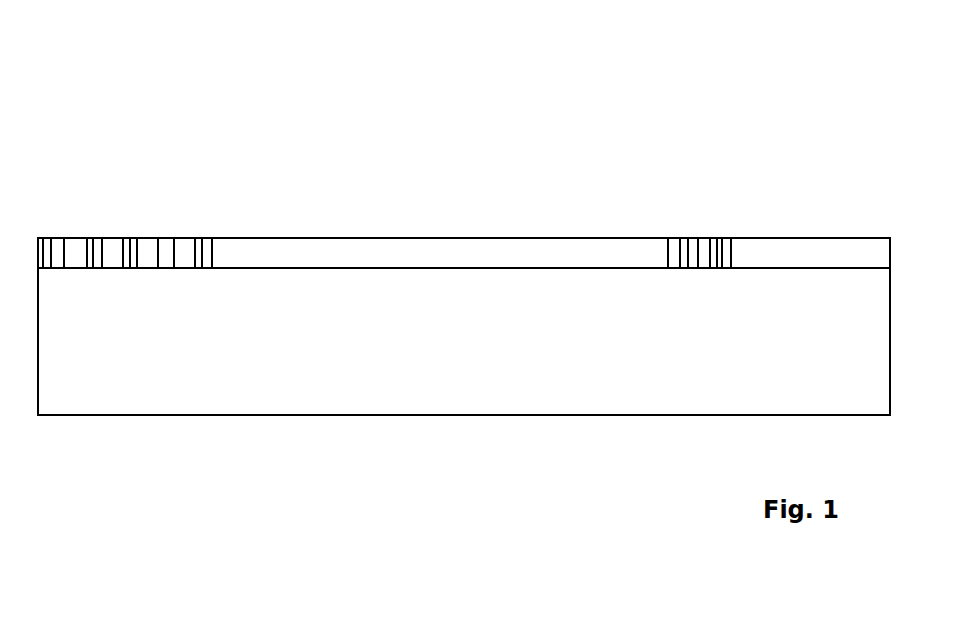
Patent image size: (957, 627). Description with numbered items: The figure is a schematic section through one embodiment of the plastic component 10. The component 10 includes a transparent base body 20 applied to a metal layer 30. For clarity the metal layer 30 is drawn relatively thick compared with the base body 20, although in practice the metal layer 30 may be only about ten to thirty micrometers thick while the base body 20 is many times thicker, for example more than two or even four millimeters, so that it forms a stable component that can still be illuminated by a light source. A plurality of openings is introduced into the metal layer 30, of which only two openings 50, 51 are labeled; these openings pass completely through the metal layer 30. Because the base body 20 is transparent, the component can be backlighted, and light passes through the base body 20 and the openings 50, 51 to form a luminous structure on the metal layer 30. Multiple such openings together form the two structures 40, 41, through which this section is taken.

The plastic component 10 is at (464, 261).
The transparent base body 20 is at (232, 398).
The metal layer 30 is at (372, 253).
The structure 40 is at (127, 222).
The structure 41 is at (698, 231).
The opening 50 is at (207, 238).
The opening 51 is at (725, 238).